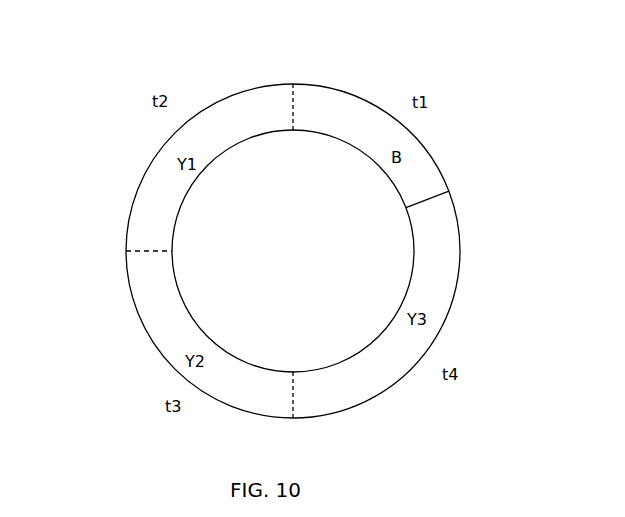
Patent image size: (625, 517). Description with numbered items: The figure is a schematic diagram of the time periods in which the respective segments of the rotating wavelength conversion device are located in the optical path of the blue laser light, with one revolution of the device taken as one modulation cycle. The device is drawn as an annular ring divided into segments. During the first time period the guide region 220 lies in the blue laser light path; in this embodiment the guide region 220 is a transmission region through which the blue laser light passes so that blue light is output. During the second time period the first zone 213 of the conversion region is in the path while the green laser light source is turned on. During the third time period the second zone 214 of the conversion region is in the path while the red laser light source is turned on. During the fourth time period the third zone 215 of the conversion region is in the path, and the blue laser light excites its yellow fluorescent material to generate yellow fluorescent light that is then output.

The guide region 220 is at (341, 109).
The first zone 213 is at (159, 203).
The second zone 214 is at (160, 311).
The third zone 215 is at (370, 370).